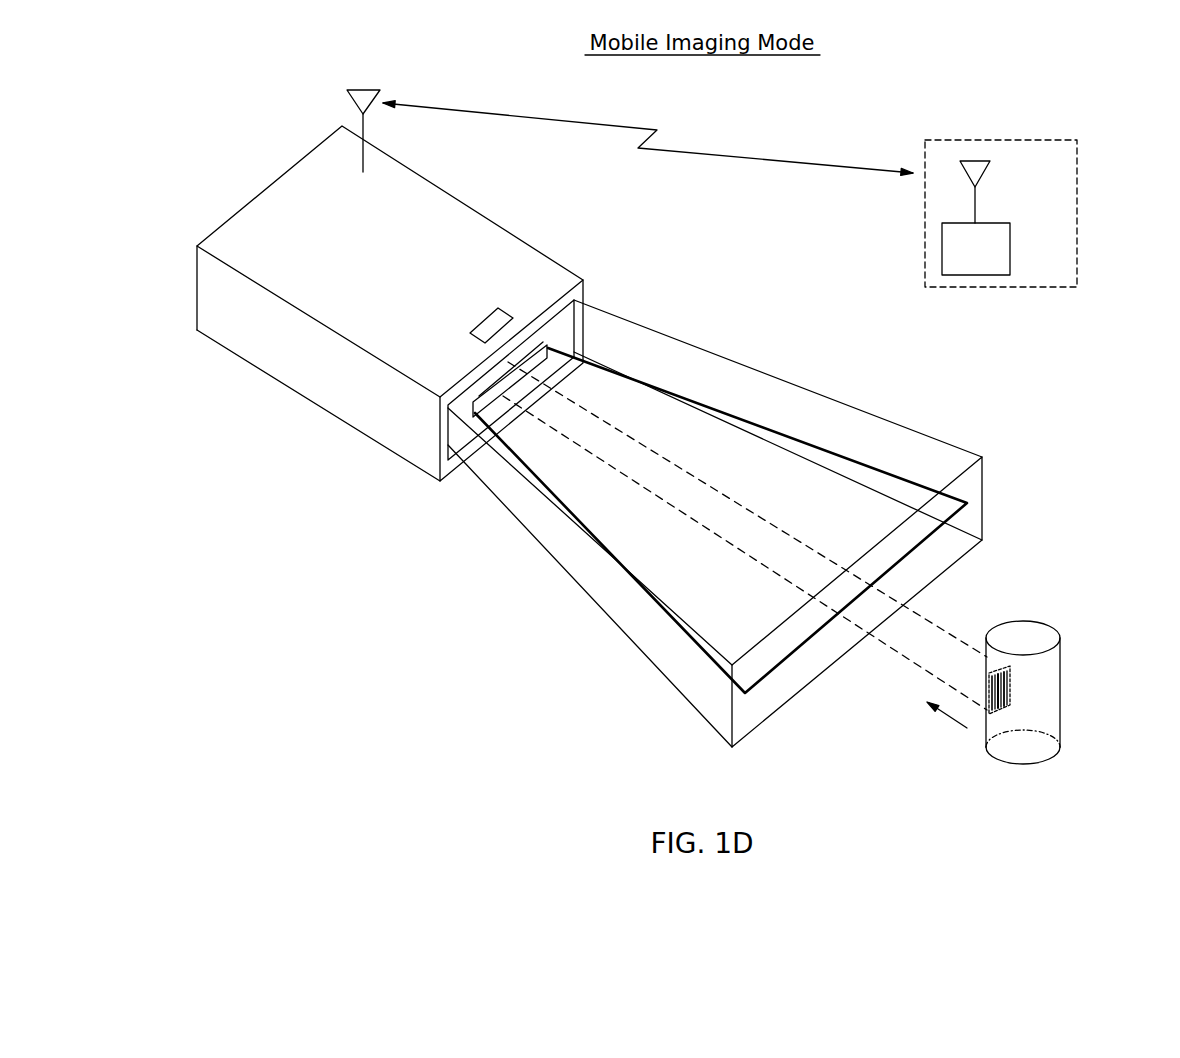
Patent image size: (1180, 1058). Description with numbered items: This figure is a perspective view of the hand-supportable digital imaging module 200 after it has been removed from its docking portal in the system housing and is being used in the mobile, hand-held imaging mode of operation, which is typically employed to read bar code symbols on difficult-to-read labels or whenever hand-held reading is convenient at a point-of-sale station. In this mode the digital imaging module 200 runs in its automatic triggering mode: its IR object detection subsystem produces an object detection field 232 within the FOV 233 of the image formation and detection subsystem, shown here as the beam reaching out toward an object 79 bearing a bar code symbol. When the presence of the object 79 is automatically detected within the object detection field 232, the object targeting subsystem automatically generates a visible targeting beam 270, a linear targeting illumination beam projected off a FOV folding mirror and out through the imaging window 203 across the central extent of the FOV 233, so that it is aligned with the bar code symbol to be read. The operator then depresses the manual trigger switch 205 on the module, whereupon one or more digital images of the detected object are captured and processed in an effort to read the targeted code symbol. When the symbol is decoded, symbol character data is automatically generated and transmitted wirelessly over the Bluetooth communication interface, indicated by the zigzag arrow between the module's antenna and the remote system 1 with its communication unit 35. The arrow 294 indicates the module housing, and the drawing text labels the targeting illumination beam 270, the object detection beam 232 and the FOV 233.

The hand-supportable digital imaging module 200 is at (285, 198).
The manual trigger switch 205 is at (497, 318).
The housing direction indicator 294 is at (230, 357).
The imaging window 203 is at (462, 405).
The object detection field 232 is at (660, 500).
The FOV 233 is at (662, 648).
The visible targeting beam 270 is at (967, 503).
The object with bar code symbol 79 is at (1053, 693).
The host system / base station 1 is at (1077, 205).
The wireless transceiver unit 35 is at (1010, 247).